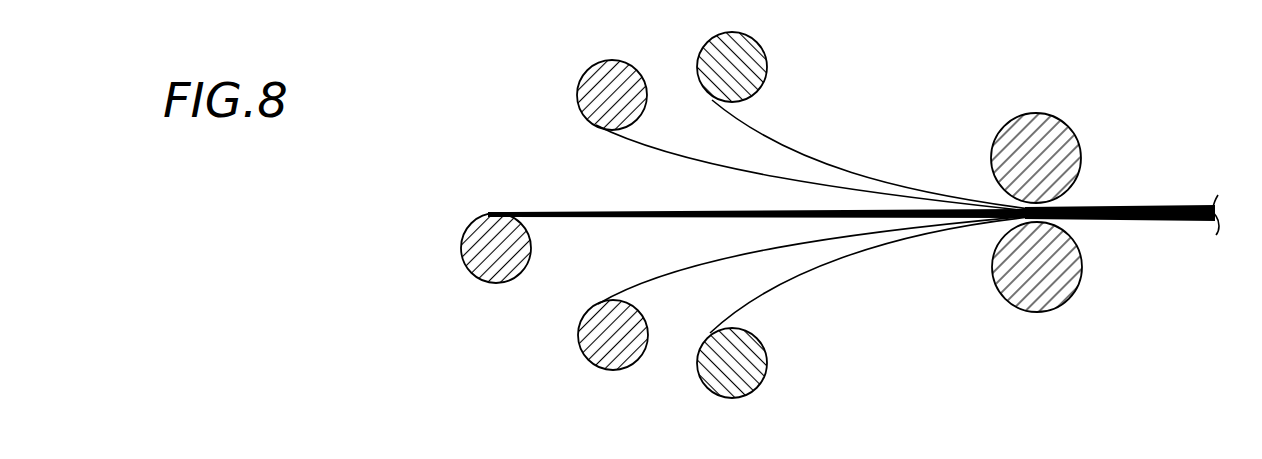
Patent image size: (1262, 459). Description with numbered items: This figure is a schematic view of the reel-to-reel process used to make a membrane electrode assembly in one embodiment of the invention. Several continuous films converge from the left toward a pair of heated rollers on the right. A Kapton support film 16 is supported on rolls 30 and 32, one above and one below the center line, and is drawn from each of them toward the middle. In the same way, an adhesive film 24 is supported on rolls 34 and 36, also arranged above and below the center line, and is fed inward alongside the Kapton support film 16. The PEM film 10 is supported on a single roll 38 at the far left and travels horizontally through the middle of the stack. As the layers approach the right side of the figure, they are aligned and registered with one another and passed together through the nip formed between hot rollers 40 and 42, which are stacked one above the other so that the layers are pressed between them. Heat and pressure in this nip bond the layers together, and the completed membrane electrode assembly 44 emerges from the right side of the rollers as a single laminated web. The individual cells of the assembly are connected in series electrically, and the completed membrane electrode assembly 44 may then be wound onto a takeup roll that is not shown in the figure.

The PEM film 10 is at (606, 212).
The Kapton support film 16 is at (763, 142).
The adhesive film 24 is at (648, 148).
The roll 30 is at (701, 49).
The roll 32 is at (768, 358).
The roll 34 is at (578, 80).
The roll 36 is at (579, 336).
The roll 38 is at (461, 242).
The hot roller 40 is at (1040, 114).
The hot roller 42 is at (993, 267).
The membrane electrode assembly 44 is at (1148, 205).